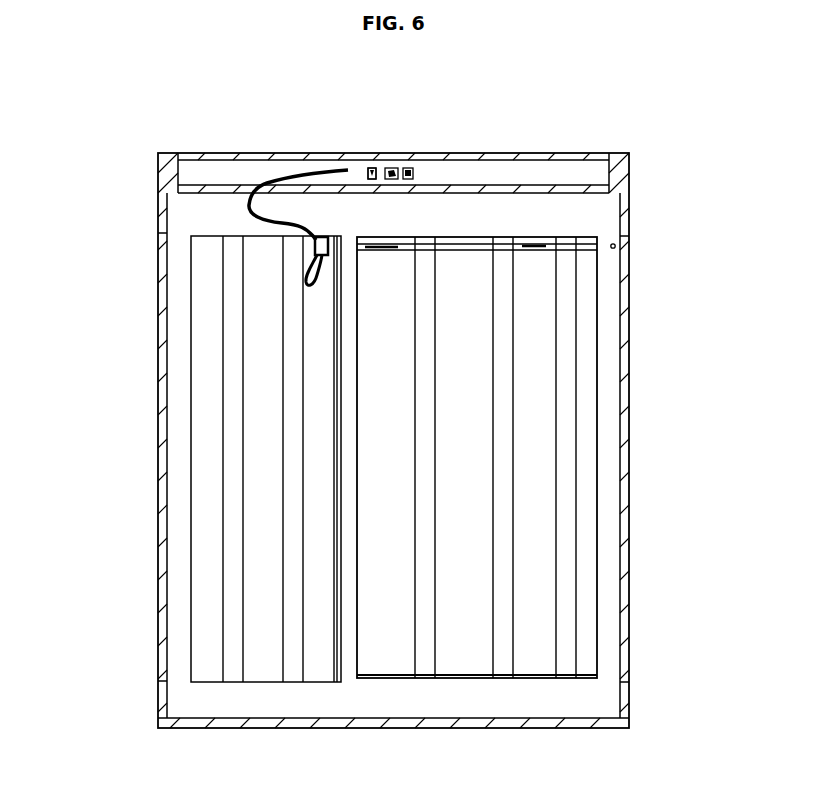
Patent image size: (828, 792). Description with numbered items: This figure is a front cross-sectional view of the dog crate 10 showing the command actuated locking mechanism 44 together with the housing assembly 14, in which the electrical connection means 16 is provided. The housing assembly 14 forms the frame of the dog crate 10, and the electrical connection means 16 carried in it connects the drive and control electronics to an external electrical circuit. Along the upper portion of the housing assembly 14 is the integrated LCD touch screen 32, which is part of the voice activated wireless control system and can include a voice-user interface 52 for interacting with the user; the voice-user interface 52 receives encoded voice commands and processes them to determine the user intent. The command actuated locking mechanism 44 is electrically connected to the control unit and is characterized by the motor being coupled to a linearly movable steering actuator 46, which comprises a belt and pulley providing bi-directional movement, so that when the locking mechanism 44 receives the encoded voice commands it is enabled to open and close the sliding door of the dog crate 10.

The dog crate 10 is at (133, 100).
The housing assembly 14 is at (167, 361).
The electrical connection means 16 is at (285, 172).
The integrated LCD touch screen 32 is at (386, 163).
The command actuated locking mechanism 44 is at (328, 252).
The linearly movable steering actuator 46 is at (527, 252).
The voice-user interface 52 is at (365, 164).